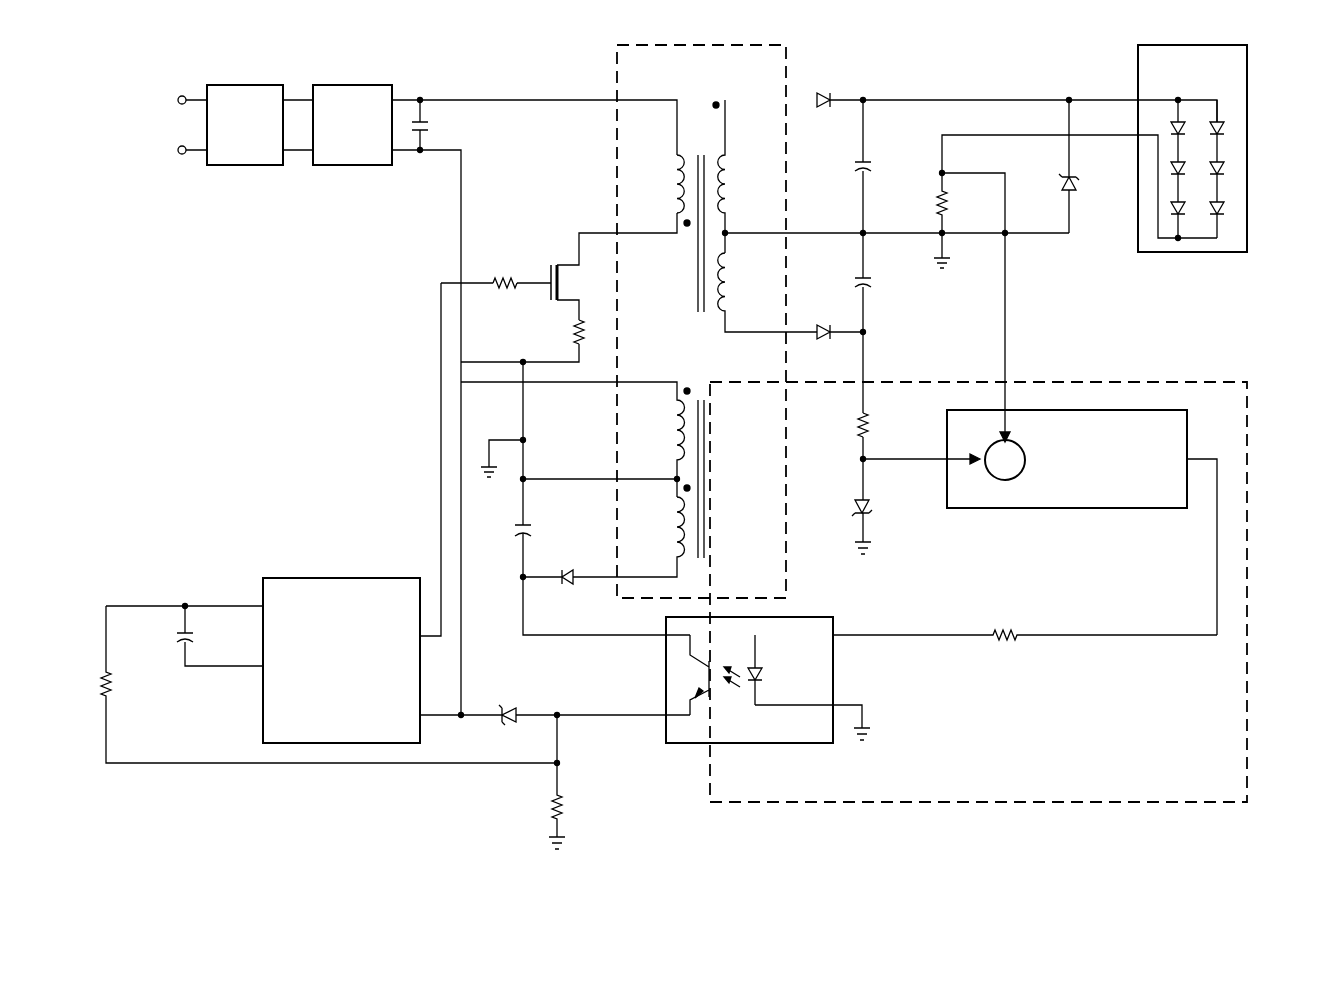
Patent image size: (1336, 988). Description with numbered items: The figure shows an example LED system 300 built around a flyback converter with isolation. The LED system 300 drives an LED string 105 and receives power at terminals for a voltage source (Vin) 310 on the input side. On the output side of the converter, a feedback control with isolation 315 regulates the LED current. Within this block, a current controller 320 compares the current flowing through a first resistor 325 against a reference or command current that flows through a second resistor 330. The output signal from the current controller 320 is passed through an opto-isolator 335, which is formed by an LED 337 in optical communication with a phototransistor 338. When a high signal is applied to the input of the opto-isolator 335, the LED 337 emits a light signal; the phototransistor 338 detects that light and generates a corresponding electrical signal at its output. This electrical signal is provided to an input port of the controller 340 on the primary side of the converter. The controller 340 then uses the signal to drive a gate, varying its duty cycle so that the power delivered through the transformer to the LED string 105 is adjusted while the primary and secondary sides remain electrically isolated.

The LED system 300 is at (1276, 102).
The terminals for a voltage source (Vin) 310 is at (141, 119).
The feedback control with isolation 315 is at (1249, 683).
The current controller 320 is at (1065, 512).
The first resistor 325 is at (936, 206).
The second resistor 330 is at (858, 429).
The opto-isolator 335 is at (735, 745).
The LED 337 is at (764, 680).
The phototransistor 338 is at (712, 691).
The controller 340 is at (343, 577).
The LED string 105 is at (1193, 253).